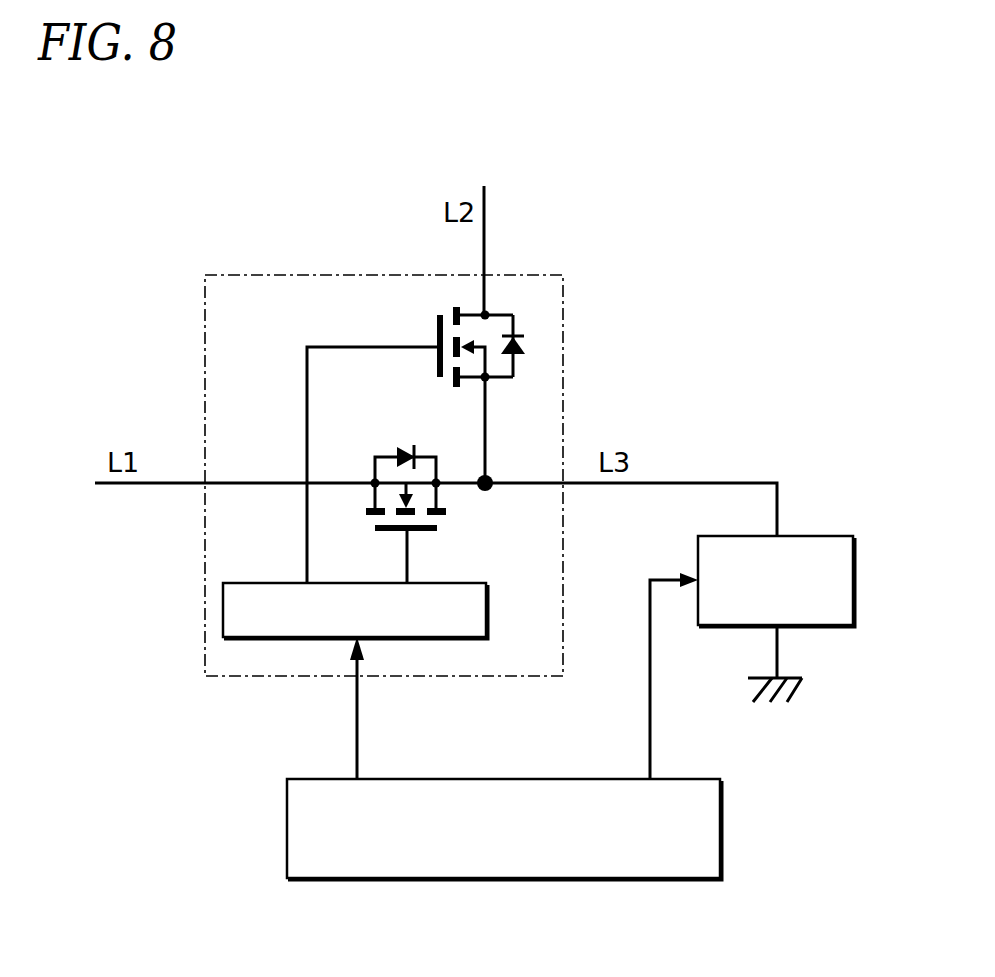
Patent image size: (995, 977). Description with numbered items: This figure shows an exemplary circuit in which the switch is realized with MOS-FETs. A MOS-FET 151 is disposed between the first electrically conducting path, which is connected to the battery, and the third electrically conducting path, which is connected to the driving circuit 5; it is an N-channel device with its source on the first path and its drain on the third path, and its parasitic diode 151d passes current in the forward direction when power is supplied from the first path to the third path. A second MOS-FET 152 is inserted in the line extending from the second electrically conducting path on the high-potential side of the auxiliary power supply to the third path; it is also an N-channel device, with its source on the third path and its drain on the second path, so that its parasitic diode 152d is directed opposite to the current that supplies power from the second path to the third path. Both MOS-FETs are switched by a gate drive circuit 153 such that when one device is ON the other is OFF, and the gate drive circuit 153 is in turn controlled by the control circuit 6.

The MOS-FET 152 is at (437, 330).
The parasitic diode 152d is at (525, 342).
The MOS-FET 151 is at (422, 531).
The parasitic diode 151d is at (406, 447).
The gate drive circuit 153 is at (272, 583).
The driving circuit 5 is at (811, 536).
The control circuit 6 is at (502, 878).